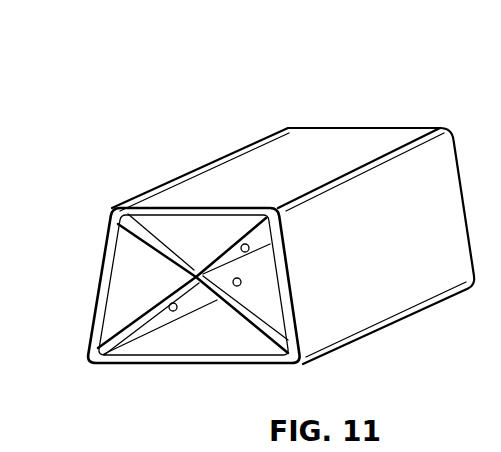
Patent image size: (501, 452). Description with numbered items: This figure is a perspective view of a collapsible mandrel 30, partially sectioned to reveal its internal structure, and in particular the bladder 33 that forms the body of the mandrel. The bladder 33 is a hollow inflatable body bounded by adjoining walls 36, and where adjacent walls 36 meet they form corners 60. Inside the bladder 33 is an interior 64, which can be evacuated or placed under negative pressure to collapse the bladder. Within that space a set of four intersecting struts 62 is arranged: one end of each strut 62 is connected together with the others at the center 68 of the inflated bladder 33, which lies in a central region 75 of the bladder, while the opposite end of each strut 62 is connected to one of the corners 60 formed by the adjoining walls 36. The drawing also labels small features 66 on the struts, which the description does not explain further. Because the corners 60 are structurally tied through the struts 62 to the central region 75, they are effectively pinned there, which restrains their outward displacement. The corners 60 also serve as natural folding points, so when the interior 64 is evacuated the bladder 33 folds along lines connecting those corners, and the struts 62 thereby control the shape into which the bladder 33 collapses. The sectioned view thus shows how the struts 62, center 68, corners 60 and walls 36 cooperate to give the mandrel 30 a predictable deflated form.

The mandrel 30 is at (354, 90).
The bladder 33 is at (261, 122).
The wall 36 is at (427, 177).
The corner 60 is at (113, 195).
The strut 62 is at (157, 248).
The interior 64 is at (108, 307).
The holes 66 is at (168, 305).
The center 68 is at (180, 276).
The central region 75 is at (180, 278).